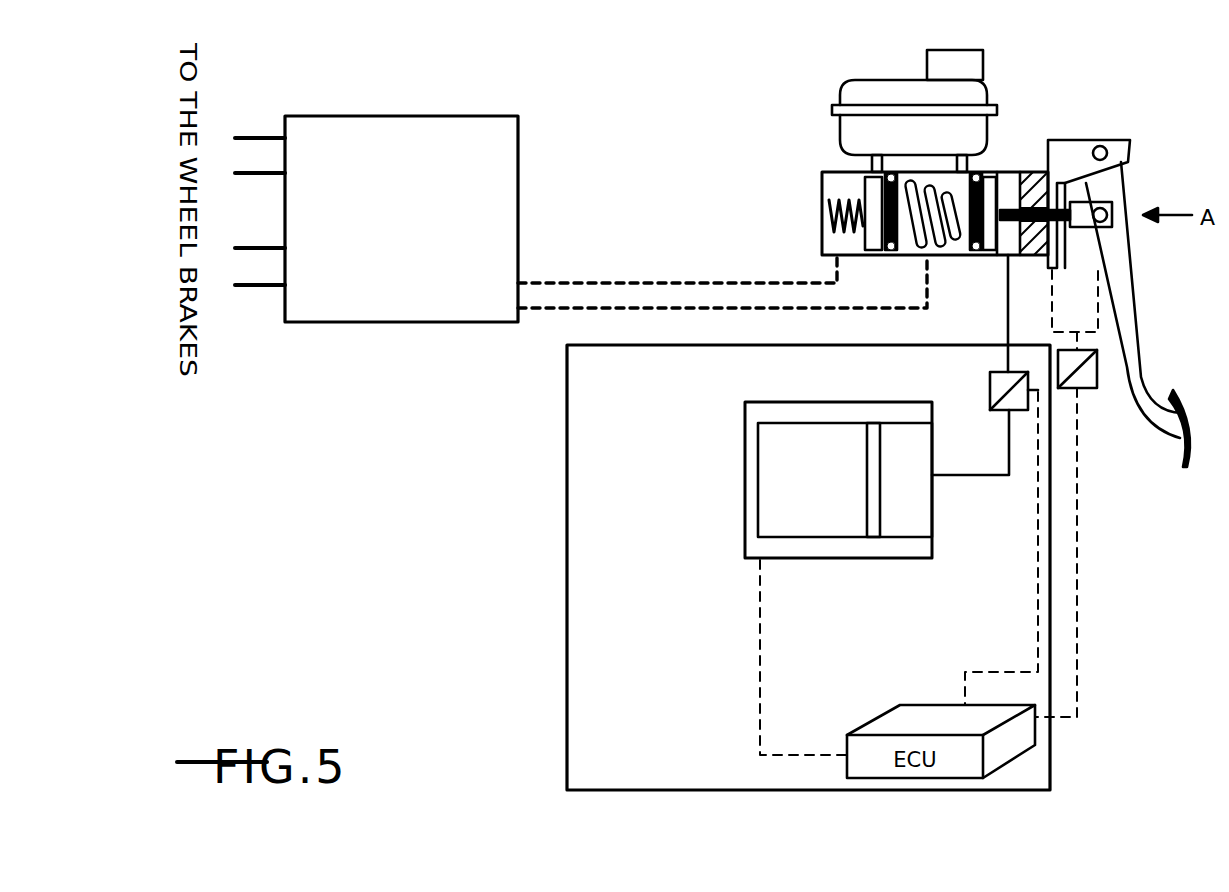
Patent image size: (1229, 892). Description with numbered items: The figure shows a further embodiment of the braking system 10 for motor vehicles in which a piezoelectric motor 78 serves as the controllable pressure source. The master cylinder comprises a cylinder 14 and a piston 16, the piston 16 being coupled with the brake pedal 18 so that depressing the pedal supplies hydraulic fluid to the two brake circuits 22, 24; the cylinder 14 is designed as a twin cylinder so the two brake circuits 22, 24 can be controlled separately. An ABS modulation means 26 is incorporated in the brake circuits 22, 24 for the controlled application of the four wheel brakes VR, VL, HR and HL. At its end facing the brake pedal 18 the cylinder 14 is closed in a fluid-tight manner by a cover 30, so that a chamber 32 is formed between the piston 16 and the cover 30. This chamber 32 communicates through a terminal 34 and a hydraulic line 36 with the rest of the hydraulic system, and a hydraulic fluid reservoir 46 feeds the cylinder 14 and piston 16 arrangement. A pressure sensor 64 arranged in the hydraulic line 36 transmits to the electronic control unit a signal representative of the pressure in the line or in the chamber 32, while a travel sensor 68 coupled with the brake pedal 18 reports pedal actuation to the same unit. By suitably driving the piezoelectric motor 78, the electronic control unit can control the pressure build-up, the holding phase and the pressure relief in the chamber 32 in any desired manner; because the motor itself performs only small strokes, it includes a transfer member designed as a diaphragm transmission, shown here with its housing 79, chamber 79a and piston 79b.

The braking system 10 is at (1102, 554).
The cylinder 14 is at (861, 257).
The piston 16 is at (960, 213).
The brake pedal 18 is at (1123, 297).
The brake circuit 22 is at (540, 283).
The brake circuit 24 is at (535, 310).
The ABS modulation means 26 is at (518, 158).
The cover 30 is at (1035, 168).
The chamber 32 is at (1020, 165).
The terminal 34 is at (1007, 260).
The hydraulic line 36 is at (1006, 328).
The hydraulic fluid reservoir 46 is at (893, 88).
The pressure sensor 64 is at (988, 390).
The travel sensor 68 is at (1090, 392).
The piezoelectric motor 78 is at (809, 560).
The simulator cylinder 79 is at (915, 493).
The simulator chamber 79a is at (807, 559).
The simulator piston 79b is at (880, 440).